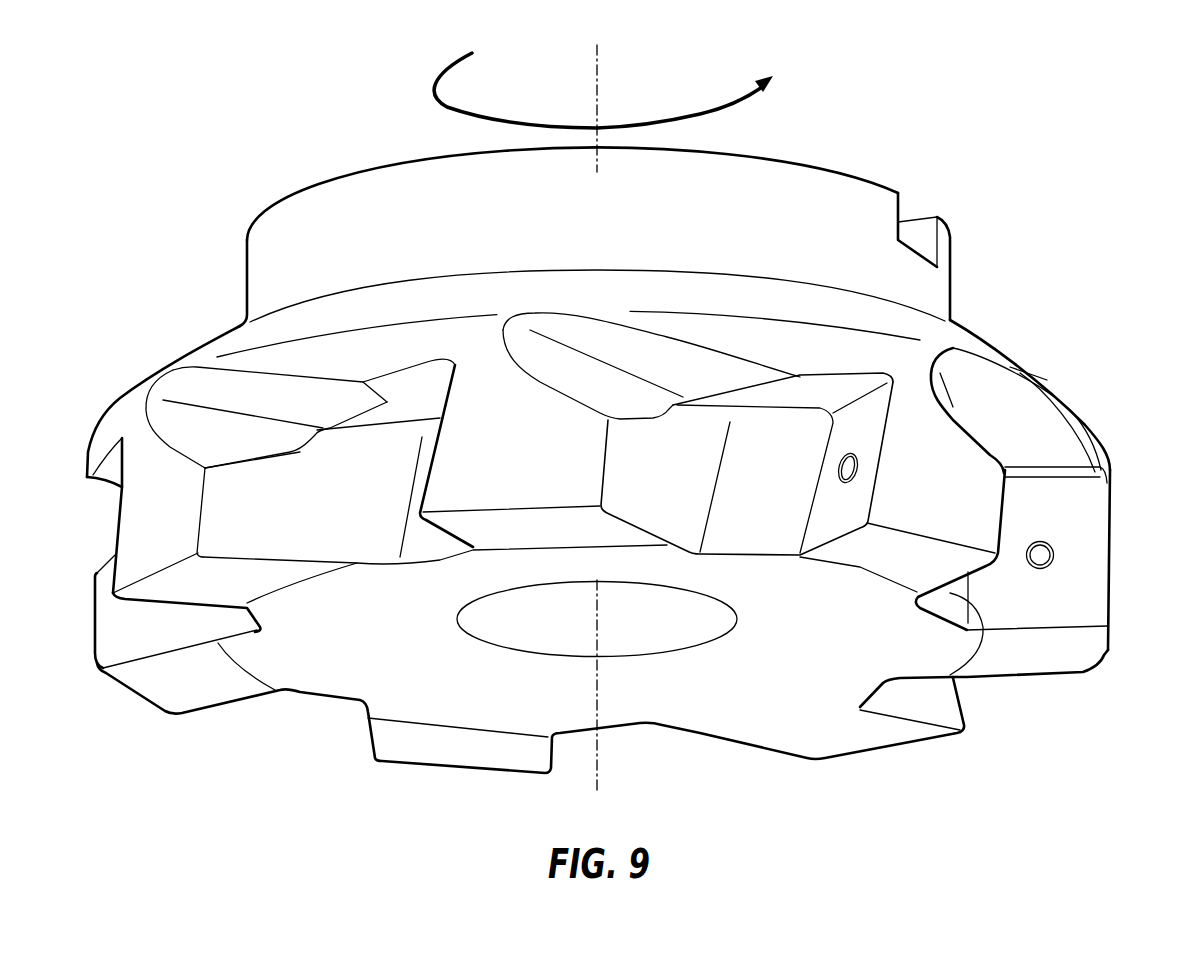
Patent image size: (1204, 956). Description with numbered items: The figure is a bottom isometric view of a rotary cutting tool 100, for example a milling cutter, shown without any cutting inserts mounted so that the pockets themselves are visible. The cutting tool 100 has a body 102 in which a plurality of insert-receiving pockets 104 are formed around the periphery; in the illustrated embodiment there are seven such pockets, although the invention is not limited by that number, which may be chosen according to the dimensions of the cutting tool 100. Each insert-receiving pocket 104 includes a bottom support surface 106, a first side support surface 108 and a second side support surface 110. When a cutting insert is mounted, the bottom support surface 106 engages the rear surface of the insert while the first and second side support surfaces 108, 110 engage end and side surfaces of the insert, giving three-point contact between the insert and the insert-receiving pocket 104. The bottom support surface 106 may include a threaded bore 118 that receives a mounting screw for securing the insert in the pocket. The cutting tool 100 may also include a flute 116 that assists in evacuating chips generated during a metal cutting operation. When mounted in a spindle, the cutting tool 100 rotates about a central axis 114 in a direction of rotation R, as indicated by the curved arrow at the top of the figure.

The rotary cutting tool 100 is at (1002, 120).
The body 102 is at (923, 327).
The insert-receiving pocket 104 is at (300, 500).
The bottom support surface 106 is at (426, 449).
The first side support surface 108 is at (1108, 494).
The second side support surface 110 is at (428, 547).
The central axis 114 is at (597, 67).
The flute 116 is at (200, 389).
The threaded bore 118 is at (840, 467).
The direction of rotation R is at (427, 82).